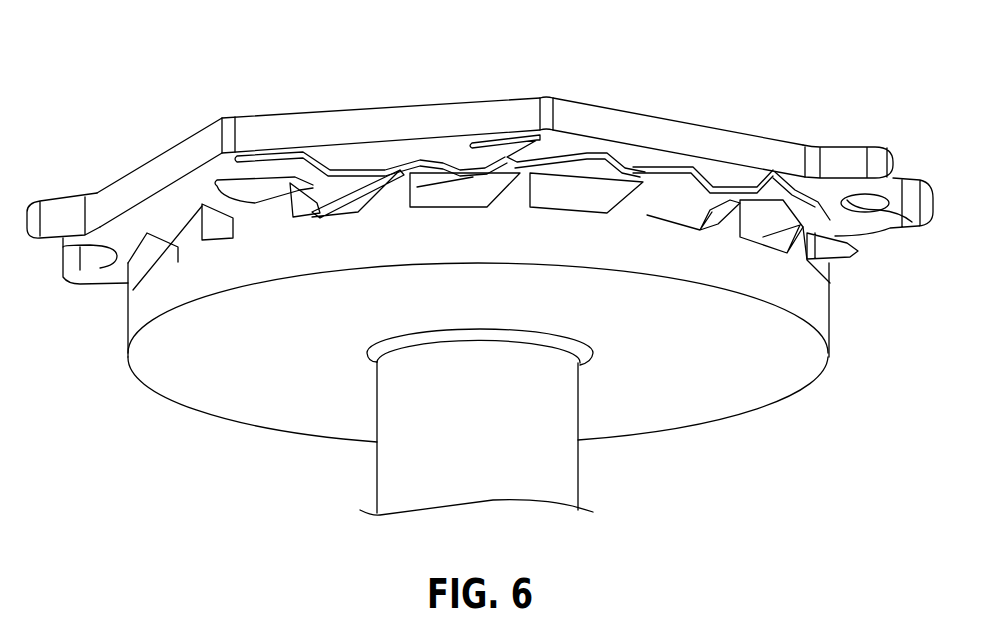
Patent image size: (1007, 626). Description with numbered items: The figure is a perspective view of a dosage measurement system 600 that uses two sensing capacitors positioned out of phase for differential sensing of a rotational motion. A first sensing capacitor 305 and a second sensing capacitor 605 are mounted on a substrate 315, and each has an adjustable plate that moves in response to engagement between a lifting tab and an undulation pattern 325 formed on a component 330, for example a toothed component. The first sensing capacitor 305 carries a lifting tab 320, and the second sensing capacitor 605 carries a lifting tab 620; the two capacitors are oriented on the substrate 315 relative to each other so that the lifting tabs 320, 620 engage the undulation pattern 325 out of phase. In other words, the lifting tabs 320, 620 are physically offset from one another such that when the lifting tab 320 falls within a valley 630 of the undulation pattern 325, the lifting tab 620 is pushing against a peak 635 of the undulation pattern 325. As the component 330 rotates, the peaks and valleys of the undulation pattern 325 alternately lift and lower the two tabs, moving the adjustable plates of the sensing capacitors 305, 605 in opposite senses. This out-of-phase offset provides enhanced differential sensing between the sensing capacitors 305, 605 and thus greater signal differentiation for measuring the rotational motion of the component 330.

The dosage measurement system 600 is at (160, 72).
The substrate 315 is at (256, 128).
The lifting tab 320 is at (362, 195).
The sensing capacitor 305 is at (468, 179).
The sensing capacitor 605 is at (683, 195).
The lifting tab 620 is at (787, 213).
The valley 630 is at (327, 217).
The peak 635 is at (827, 258).
The undulation pattern 325 is at (171, 272).
The component 330 is at (677, 345).